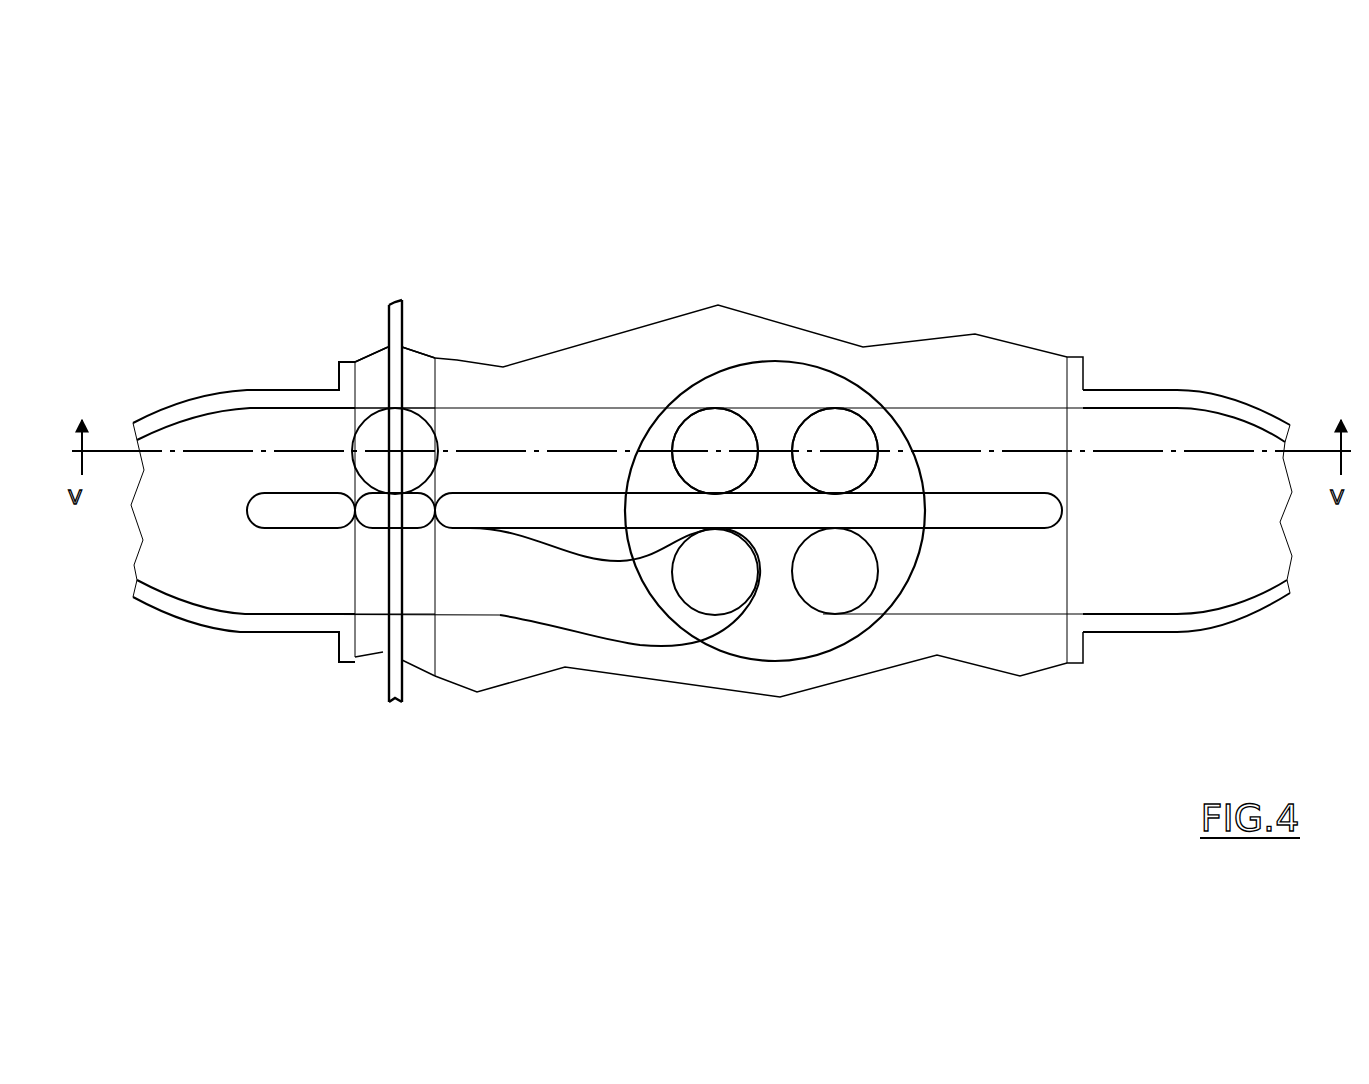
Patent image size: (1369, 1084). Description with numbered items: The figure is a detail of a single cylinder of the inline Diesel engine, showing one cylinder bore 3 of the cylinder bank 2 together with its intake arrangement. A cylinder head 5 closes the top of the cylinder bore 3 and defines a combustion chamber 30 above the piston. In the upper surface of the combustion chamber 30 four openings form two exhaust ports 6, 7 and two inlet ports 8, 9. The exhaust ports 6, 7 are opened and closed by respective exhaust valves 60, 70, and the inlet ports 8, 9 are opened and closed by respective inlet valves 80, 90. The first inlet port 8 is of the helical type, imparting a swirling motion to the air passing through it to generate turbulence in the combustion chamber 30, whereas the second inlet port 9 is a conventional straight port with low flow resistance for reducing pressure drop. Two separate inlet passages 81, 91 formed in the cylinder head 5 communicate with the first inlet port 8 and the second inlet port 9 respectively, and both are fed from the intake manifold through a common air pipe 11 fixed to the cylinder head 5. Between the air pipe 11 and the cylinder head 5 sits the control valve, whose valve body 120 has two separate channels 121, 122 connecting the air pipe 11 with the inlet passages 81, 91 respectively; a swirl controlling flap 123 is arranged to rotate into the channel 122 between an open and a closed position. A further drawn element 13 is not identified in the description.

The cylinder bank 2 is at (374, 325).
The cylinder bore 3 is at (1020, 676).
The cylinder head 5 is at (487, 675).
The exhaust port 6 is at (816, 404).
The exhaust port 7 is at (823, 620).
The first inlet port 8 is at (761, 553).
The second inlet port 9 is at (742, 406).
The air pipe 11 is at (200, 397).
The plate 13 is at (388, 680).
The combustion chamber 30 is at (767, 522).
The exhaust valve 60 is at (843, 432).
The exhaust valve 70 is at (886, 624).
The inlet valve 80 is at (707, 593).
The inlet passage 81 is at (590, 612).
The inlet valve 90 is at (713, 425).
The inlet passage 91 is at (612, 423).
The valve body 120 is at (417, 357).
The channel 121 is at (375, 609).
The channel 122 is at (354, 415).
The swirl controlling flap 123 is at (413, 433).